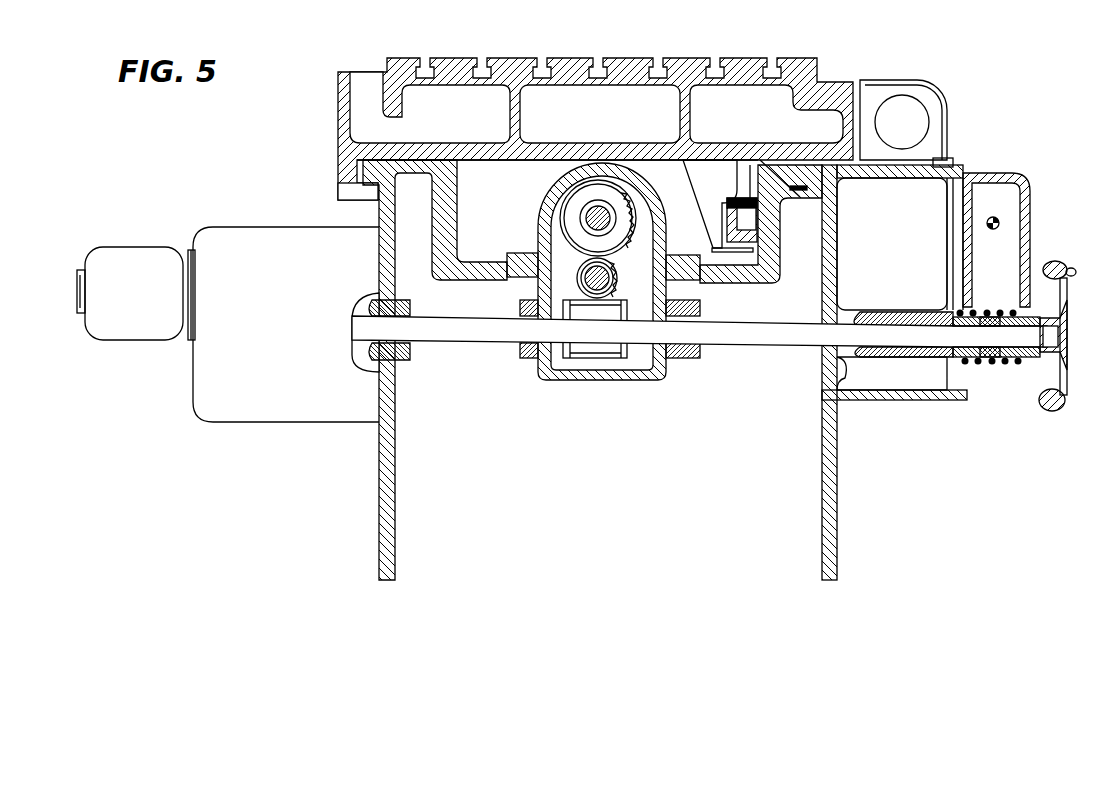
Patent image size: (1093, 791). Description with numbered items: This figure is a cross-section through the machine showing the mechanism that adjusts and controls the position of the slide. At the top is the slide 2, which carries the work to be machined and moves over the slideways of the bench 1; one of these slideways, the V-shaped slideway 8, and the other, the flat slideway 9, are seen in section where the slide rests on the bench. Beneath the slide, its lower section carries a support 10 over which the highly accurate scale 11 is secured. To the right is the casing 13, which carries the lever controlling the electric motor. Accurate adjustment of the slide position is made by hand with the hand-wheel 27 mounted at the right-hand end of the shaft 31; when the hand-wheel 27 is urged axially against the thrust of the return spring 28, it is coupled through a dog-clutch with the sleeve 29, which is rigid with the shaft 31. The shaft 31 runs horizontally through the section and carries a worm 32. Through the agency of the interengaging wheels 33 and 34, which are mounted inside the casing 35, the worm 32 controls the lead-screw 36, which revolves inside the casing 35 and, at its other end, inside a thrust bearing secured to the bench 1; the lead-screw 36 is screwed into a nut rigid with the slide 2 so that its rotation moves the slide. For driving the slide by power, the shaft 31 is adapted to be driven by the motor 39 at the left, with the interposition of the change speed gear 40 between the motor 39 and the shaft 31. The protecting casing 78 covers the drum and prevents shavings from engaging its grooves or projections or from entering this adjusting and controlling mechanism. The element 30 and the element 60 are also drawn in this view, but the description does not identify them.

The bench 1 is at (390, 488).
The slide 2 is at (401, 60).
The V-shaped slideway 8 is at (783, 166).
The flat slideway 9 is at (407, 153).
The support 10 is at (715, 162).
The scale 11 is at (740, 220).
The casing 13 is at (1030, 229).
The hand-wheel 27 is at (1057, 265).
The return spring 28 is at (1010, 360).
The sleeve 29 is at (982, 358).
The nut 30 is at (990, 309).
The shaft 31 is at (728, 332).
The worm 32 is at (599, 340).
The interengaging wheel 33 is at (582, 263).
The interengaging wheel 34 is at (575, 202).
The casing 35 is at (657, 233).
The lead-screw 36 is at (613, 217).
The electric motor 39 is at (125, 266).
The change speed gear 40 is at (237, 249).
The roller 60 is at (898, 110).
The protecting casing 78 is at (947, 120).